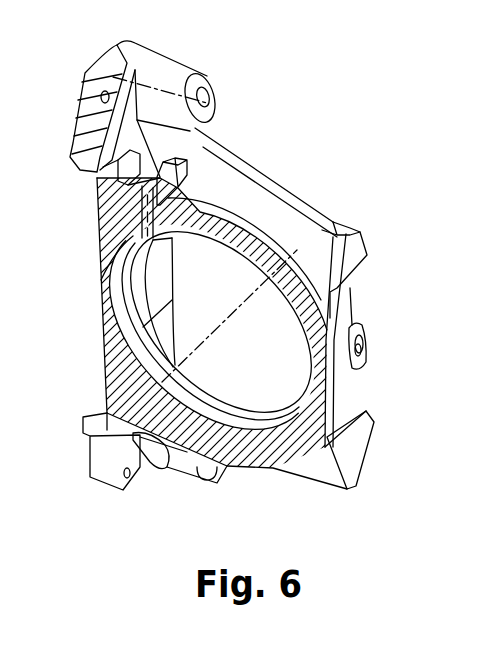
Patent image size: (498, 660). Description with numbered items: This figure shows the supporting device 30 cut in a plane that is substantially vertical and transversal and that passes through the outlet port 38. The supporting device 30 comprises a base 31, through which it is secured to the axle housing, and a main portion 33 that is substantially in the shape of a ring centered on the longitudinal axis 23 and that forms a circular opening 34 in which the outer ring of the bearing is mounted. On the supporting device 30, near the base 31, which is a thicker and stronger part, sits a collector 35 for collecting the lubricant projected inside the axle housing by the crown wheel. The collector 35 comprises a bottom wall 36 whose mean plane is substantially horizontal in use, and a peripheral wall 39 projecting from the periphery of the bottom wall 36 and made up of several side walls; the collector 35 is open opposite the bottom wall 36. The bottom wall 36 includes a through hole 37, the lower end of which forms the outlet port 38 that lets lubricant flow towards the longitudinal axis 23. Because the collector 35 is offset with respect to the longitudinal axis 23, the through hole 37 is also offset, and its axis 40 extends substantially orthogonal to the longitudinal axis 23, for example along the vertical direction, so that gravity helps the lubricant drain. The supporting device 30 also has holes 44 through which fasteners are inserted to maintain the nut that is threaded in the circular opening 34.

The supporting device 30 is at (348, 168).
The base 31 is at (165, 78).
The longitudinal axis 23 is at (234, 309).
The main portion 33 is at (272, 468).
The circular opening 34 is at (289, 390).
The collector 35 is at (94, 173).
The bottom wall 36 is at (128, 176).
The through hole 37 is at (110, 218).
The outlet port 38 is at (170, 258).
The peripheral wall 39 is at (170, 184).
The axis 40 is at (107, 208).
The holes 44 is at (365, 363).